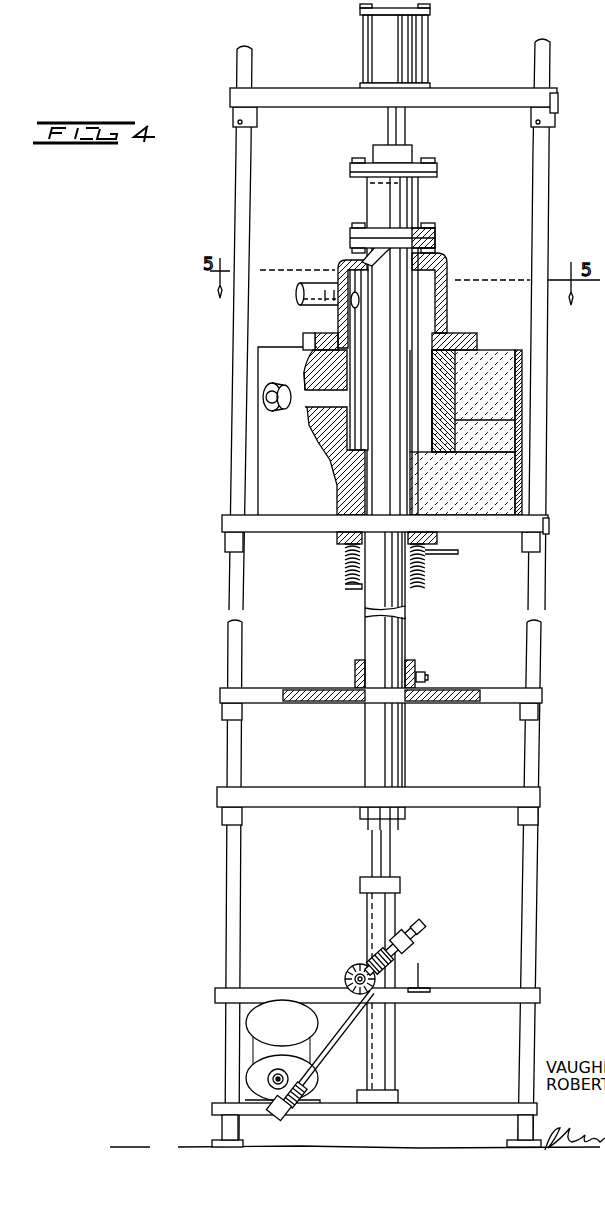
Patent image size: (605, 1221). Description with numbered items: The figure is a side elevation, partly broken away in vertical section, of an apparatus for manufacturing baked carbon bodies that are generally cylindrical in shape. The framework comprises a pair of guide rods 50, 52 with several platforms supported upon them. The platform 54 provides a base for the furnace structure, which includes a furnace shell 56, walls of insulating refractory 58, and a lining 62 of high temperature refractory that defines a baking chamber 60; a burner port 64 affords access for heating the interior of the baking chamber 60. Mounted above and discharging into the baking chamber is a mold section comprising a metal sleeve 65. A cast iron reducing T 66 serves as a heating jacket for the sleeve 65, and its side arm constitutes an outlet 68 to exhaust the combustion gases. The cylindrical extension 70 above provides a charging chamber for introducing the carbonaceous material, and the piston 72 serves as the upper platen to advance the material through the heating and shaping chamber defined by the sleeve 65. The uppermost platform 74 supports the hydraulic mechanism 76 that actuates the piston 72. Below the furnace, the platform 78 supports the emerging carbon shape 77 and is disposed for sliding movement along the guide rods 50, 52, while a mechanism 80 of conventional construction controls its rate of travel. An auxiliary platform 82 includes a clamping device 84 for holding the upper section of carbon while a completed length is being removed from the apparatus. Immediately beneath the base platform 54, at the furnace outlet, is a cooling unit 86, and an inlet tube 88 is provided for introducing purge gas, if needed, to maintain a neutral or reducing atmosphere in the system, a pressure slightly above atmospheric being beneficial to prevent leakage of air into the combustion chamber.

The guide rod 50 is at (541, 172).
The guide rod 52 is at (245, 189).
The platform 54 is at (238, 523).
The furnace shell 56 is at (522, 398).
The walls of insulating refractory 58 is at (505, 353).
The baking chamber 60 is at (418, 376).
The lining 62 is at (440, 418).
The burner port 64 is at (279, 385).
The metal sleeve 65 is at (425, 311).
The cast iron reducing T 66 is at (437, 268).
The outlet 68 is at (318, 312).
The cylindrical extension 70 is at (397, 206).
The piston 72 is at (409, 157).
The uppermost platform 74 is at (480, 100).
The hydraulic mechanism 76 is at (428, 57).
The carbon shape 77 is at (380, 752).
The platform 78 is at (482, 797).
The mechanism 80 is at (347, 969).
The auxiliary platform 82 is at (500, 697).
The clamping device 84 is at (412, 673).
The cooling unit 86 is at (336, 560).
The inlet tube 88 is at (445, 555).